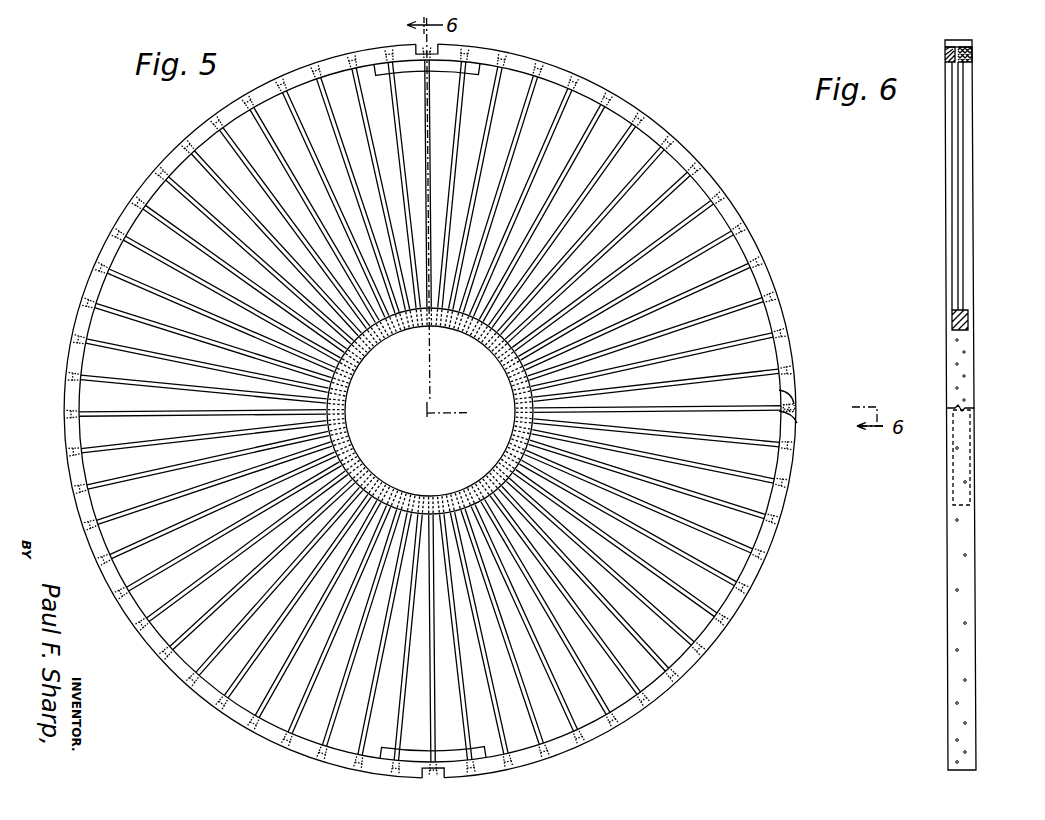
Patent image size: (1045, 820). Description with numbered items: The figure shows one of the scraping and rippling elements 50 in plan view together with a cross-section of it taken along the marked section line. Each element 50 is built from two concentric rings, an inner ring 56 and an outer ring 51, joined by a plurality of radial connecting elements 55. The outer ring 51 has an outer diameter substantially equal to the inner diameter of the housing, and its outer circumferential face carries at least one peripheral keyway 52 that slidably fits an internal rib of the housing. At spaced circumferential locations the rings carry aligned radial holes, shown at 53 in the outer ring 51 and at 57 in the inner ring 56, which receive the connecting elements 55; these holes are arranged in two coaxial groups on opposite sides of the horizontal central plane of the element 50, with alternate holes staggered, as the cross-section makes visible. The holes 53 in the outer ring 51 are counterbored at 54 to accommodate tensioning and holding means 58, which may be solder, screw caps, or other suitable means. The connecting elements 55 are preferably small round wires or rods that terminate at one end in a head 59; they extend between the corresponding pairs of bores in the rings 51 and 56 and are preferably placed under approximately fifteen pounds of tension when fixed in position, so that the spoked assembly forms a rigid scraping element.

In FIG. 5, the scraping and rippling element 50 is at (435, 411).
In FIG. 5, the outer ring 51 is at (763, 273).
In FIG. 6, the outer ring 51 is at (972, 53).
In FIG. 5, the peripheral keyway 52 is at (417, 44).
In FIG. 6, the peripheral keyway 52 is at (972, 42).
In FIG. 5, the radial hole 53 is at (794, 396).
In FIG. 5, the counterbore 54 is at (797, 423).
In FIG. 5, the radial connecting element 55 is at (135, 387).
In FIG. 6, the radial connecting element 55 is at (958, 271).
In FIG. 5, the inner ring 56 is at (498, 362).
In FIG. 6, the inner ring 56 is at (968, 324).
In FIG. 5, the radial hole 57 is at (504, 387).
In FIG. 5, the tensioning and holding means 58 is at (792, 408).
In FIG. 6, the tensioning and holding means 58 is at (945, 53).
In FIG. 5, the head 59 is at (348, 434).